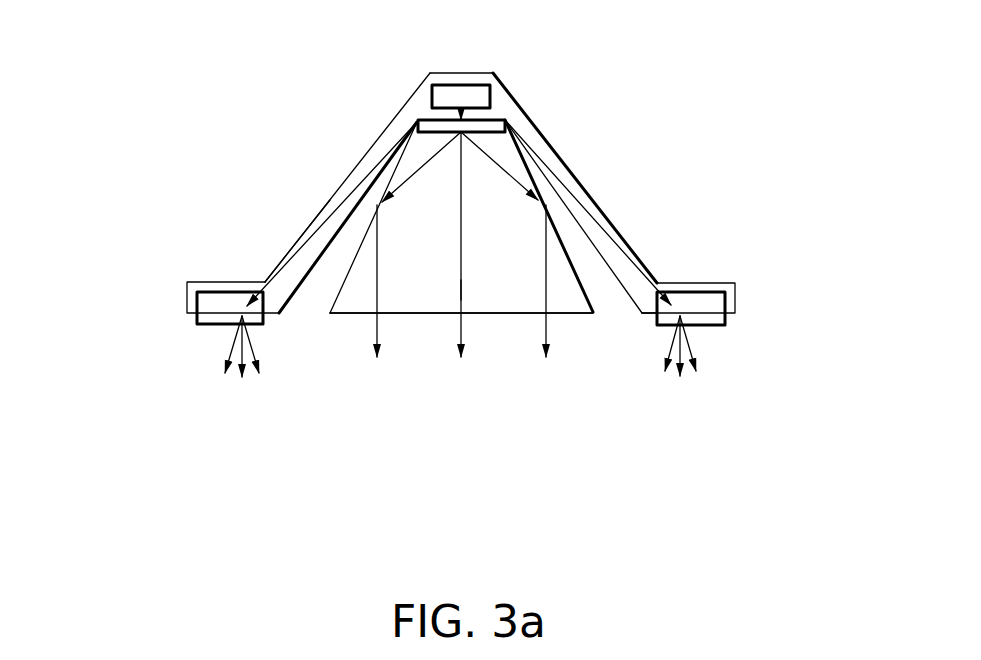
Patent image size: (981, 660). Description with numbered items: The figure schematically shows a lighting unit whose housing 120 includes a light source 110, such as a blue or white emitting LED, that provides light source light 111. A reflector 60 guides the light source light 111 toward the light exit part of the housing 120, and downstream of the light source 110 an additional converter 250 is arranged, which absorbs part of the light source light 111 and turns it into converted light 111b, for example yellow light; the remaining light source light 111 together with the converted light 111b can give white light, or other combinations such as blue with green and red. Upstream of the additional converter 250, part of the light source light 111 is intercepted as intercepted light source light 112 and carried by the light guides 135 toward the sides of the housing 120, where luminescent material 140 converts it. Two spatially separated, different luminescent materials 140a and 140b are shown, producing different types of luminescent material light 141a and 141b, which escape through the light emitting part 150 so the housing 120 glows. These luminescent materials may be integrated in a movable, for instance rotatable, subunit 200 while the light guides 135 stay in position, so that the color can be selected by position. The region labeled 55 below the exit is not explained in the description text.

The additional converter 250 is at (413, 120).
The housing 120 is at (332, 160).
The light source 110 is at (493, 83).
The reflector 60 is at (507, 123).
The light guide 135 is at (583, 187).
The movable subunit 200 is at (340, 190).
The intercepted light source light 112 is at (295, 242).
The light source light 111 is at (632, 246).
The converted light 111b is at (462, 290).
The luminescent material 140a is at (718, 302).
The luminescent material 140b is at (188, 294).
The light emitting part 150 is at (217, 314).
The luminescent material 140 is at (665, 313).
The luminescent material light 141a is at (693, 343).
The luminescent material light 141b is at (255, 346).
The illumination region 55 is at (352, 352).